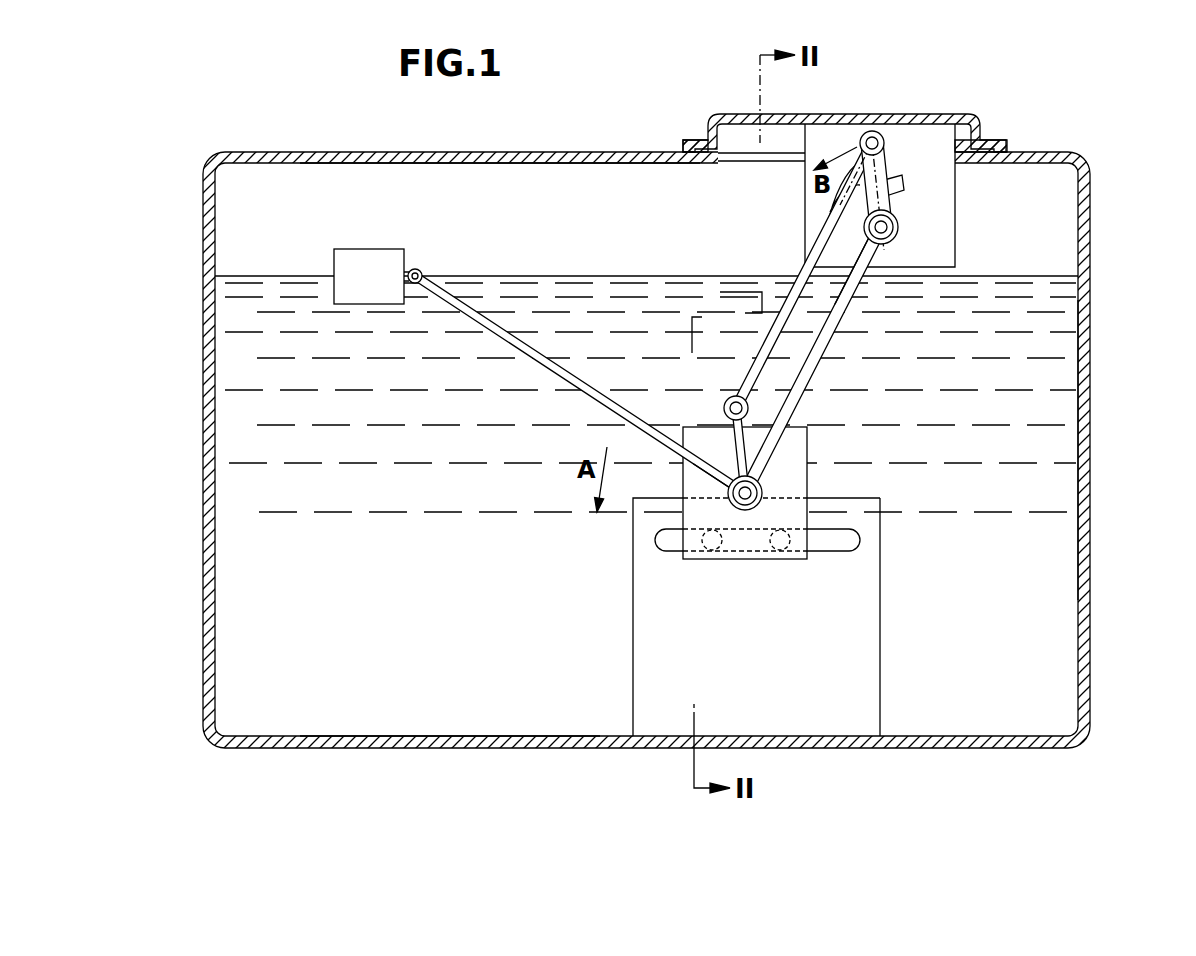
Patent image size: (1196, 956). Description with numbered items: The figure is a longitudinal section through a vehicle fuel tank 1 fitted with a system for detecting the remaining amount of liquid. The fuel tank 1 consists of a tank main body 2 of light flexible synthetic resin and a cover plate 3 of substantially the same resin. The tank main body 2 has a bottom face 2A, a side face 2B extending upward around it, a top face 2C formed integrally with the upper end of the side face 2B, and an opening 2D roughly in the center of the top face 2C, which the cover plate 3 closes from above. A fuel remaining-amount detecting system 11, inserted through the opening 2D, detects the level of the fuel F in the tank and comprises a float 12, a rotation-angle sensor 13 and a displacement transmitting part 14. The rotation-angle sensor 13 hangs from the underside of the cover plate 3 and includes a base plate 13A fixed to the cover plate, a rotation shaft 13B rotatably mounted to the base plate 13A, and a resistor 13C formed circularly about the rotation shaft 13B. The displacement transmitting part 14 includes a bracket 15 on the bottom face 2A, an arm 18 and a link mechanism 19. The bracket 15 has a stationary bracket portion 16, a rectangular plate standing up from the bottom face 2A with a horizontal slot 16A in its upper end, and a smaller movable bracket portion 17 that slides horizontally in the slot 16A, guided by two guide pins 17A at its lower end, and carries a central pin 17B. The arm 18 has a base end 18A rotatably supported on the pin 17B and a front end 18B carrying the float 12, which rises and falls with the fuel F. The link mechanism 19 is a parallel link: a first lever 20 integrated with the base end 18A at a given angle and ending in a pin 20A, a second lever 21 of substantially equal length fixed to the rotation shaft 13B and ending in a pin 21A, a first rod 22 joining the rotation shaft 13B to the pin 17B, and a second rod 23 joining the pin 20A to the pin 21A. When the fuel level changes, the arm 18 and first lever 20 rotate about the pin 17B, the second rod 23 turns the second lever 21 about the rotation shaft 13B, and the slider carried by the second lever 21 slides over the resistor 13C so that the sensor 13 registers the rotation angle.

The fuel tank 1 is at (1085, 145).
The tank main body 2 is at (297, 152).
The bottom face 2A is at (398, 745).
The side face 2B is at (1090, 430).
The top face 2C is at (567, 152).
The opening 2D is at (965, 139).
The cover plate 3 is at (980, 116).
The fuel remaining-amount detecting system 11 is at (768, 248).
The float 12 is at (372, 265).
The rotation-angle sensor 13 is at (940, 212).
The base plate 13A is at (822, 140).
The rotation shaft 13B is at (898, 227).
The resistor 13C is at (900, 183).
The displacement transmitting part 14 is at (830, 475).
The bracket 15 is at (647, 630).
The stationary bracket portion 16 is at (870, 603).
The slot 16A is at (833, 543).
The movable bracket portion 17 is at (793, 520).
The guide pins 17A is at (712, 540).
The pin 17B is at (753, 507).
The arm 18 is at (483, 327).
The base end 18A is at (733, 510).
The front end 18B is at (437, 285).
The link mechanism 19 is at (815, 372).
The first lever 20 is at (729, 428).
The pin 20A is at (724, 400).
The second lever 21 is at (893, 165).
The pin 21A is at (872, 131).
The first rod 22 is at (833, 315).
The second rod 23 is at (818, 247).
The fuel F is at (273, 320).